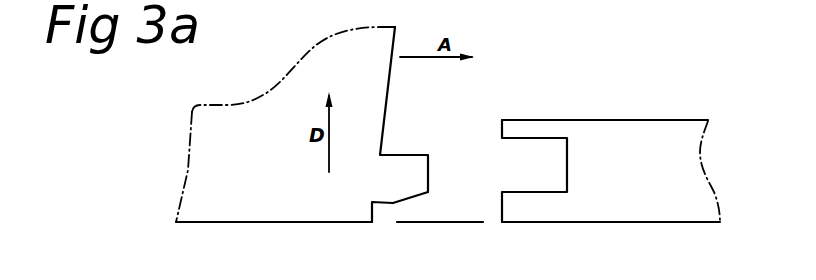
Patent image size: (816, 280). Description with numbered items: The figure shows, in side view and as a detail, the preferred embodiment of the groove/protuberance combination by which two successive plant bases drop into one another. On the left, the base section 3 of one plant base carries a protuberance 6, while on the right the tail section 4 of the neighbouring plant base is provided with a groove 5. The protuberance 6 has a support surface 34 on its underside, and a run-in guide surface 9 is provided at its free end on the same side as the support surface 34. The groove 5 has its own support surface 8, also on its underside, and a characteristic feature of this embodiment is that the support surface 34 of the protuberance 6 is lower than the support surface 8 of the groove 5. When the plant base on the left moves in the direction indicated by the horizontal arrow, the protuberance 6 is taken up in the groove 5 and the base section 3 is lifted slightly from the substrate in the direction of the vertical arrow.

The base section 3 is at (300, 185).
The support surface 34 is at (381, 204).
The run-in guide surface 9 is at (413, 197).
The protuberance 6 is at (410, 168).
The tail section 4 is at (642, 140).
The groove 5 is at (532, 158).
The support surface 8 is at (534, 192).